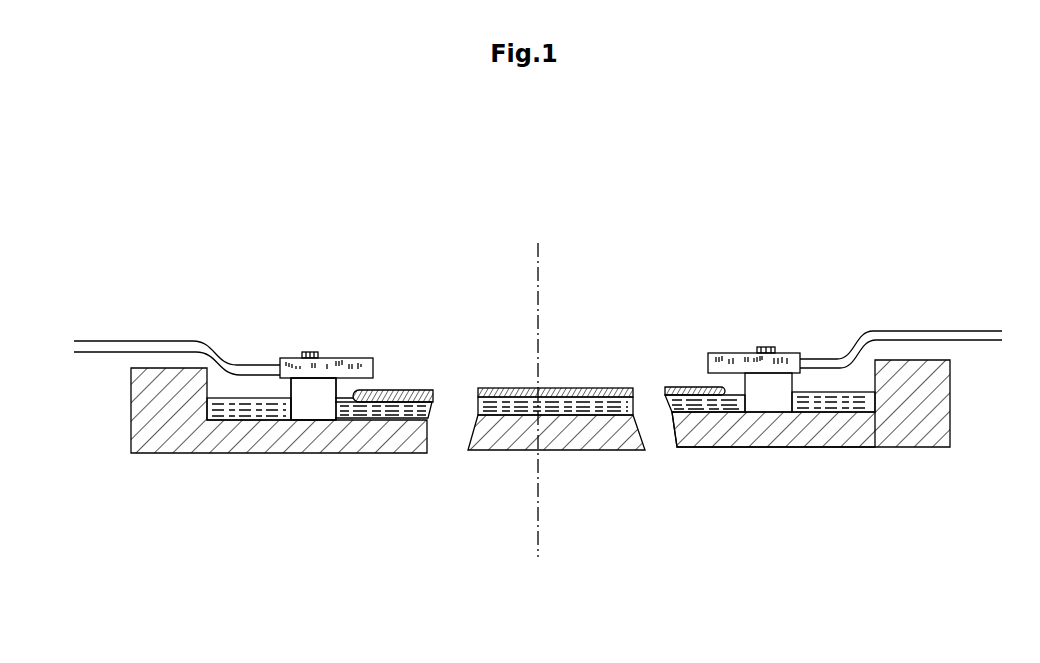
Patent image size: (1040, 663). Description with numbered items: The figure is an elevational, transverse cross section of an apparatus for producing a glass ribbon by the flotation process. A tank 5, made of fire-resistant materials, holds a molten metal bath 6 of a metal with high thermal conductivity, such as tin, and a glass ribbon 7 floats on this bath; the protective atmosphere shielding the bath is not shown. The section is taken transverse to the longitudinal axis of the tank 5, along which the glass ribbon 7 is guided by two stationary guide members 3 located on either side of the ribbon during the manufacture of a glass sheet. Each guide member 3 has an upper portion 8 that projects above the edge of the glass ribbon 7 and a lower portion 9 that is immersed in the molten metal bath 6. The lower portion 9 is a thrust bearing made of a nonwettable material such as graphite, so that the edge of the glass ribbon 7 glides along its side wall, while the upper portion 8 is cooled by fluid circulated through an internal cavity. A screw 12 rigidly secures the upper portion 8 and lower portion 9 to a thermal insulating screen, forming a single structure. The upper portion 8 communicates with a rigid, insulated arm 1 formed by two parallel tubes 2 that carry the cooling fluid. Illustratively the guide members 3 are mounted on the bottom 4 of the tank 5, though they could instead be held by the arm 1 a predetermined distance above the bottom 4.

The rigid insulated arm 1 is at (103, 339).
The parallel tube 2 is at (148, 350).
The guide member 3 is at (363, 346).
The bottom of tank 4 is at (720, 422).
The tank 5 is at (207, 440).
The molten metal bath 6 is at (262, 409).
The glass ribbon 7 is at (388, 388).
The upper portion 8 is at (347, 356).
The lower portion 9 is at (317, 406).
The screw 12 is at (303, 347).